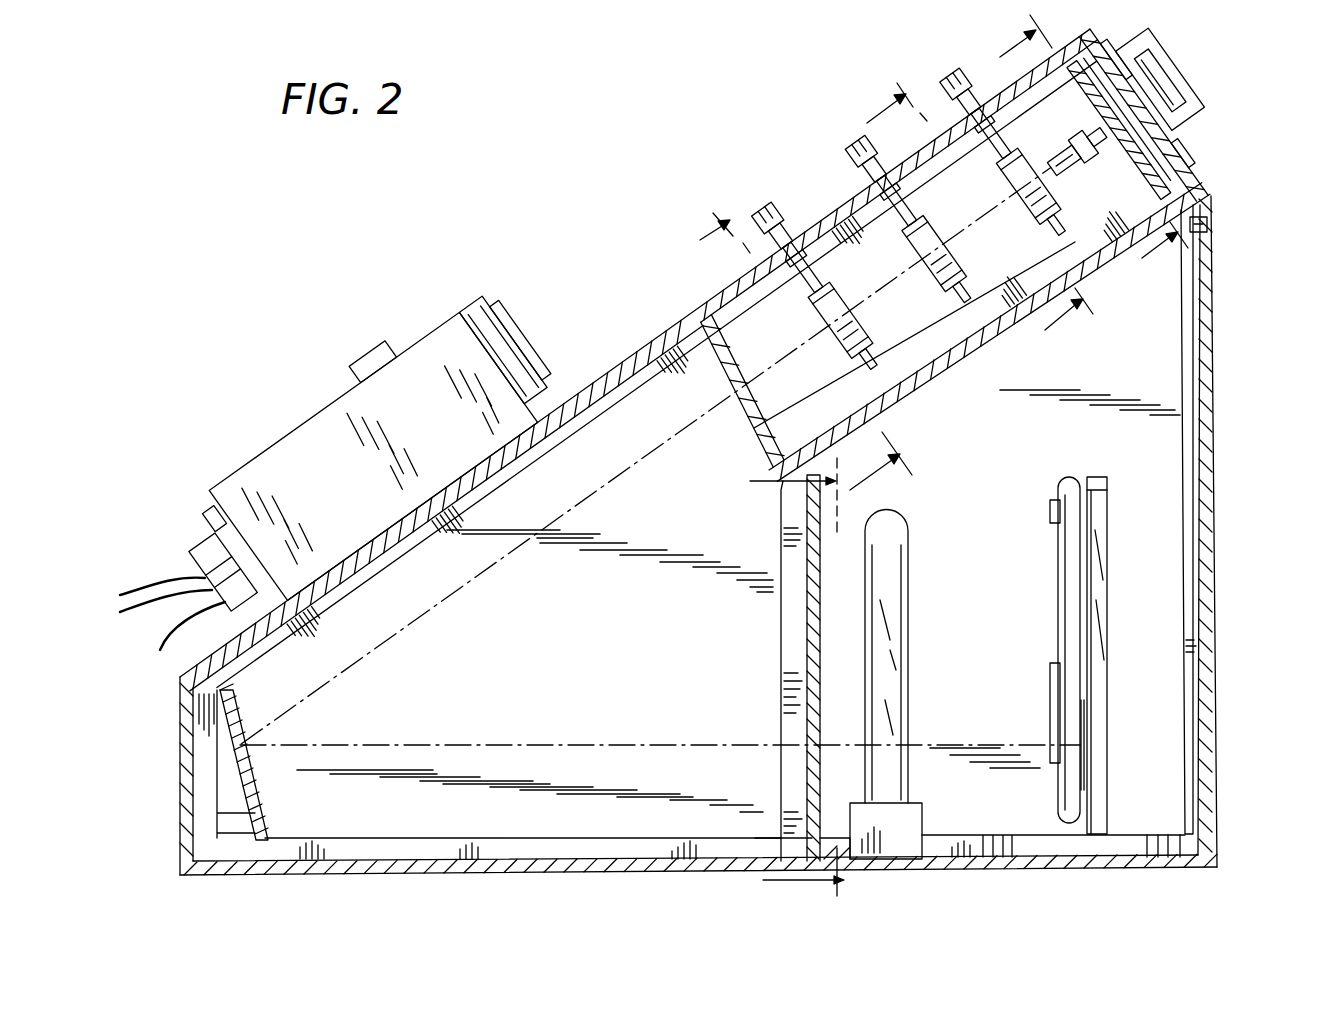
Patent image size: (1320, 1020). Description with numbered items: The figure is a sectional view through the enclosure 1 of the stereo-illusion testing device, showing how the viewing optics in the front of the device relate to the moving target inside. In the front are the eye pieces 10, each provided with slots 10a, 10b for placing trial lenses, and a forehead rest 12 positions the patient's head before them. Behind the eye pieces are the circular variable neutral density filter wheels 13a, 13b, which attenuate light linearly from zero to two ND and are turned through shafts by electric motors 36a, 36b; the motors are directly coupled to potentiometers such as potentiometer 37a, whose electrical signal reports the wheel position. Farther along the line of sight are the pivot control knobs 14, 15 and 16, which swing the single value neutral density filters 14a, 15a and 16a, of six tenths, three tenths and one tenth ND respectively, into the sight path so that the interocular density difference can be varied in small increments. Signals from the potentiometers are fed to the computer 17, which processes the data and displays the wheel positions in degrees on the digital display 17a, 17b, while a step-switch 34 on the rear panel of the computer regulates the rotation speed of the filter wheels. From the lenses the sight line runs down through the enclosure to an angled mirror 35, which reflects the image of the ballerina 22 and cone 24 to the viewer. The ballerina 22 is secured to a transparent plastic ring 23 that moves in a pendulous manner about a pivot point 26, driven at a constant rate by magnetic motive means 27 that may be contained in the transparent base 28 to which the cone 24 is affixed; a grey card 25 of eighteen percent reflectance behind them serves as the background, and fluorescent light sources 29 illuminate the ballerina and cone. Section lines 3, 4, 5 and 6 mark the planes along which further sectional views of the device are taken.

The enclosure 1 is at (178, 807).
The section line 3- 3 is at (1082, 158).
The section line 4- 4 is at (961, 225).
The section line 5- 5 is at (794, 366).
The section line 6- 6 is at (781, 677).
The eye pieces 10 is at (1190, 88).
The slot 10a is at (1165, 82).
The slot 10b is at (1157, 82).
The forehead rest 12 is at (1130, 45).
The circular variable neutral density filter wheel 13a is at (1172, 148).
The circular variable neutral density filter wheel 13b is at (1127, 119).
The pivot control knob 14 is at (957, 78).
The single value neutral density filter 14a is at (1052, 213).
The pivot control knob 15 is at (857, 162).
The single value neutral density filter 15a is at (968, 295).
The pivot control knob 16 is at (770, 213).
The single value neutral density filter 16a is at (866, 362).
The computer 17 is at (280, 457).
The digital display 17a is at (497, 277).
The digital display 17b is at (503, 351).
The ballerina 22 is at (1053, 683).
The ring 23 is at (1073, 590).
The cone 24 is at (1087, 757).
The grey card 25 is at (1198, 474).
The pivot point 26 is at (1062, 531).
The magnetic means 27 is at (1032, 840).
The transparent base 28 is at (1098, 832).
The fluorescent light sources 29 is at (899, 679).
The step-switch 34 is at (208, 513).
The mirror 35 is at (262, 792).
The electric motor 36a is at (1068, 155).
The electric motor 36b is at (1064, 161).
The potentiometer 37a is at (1206, 208).